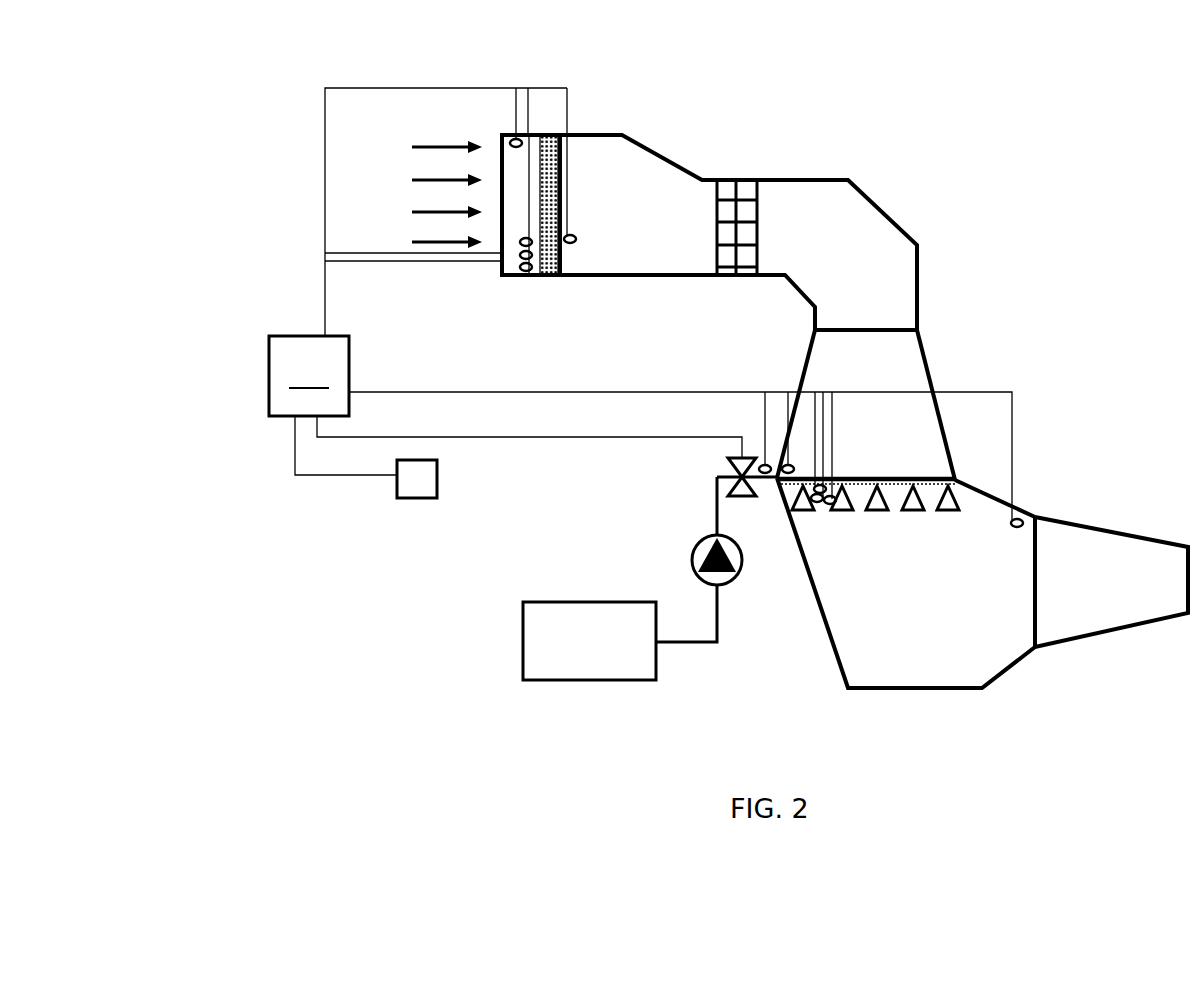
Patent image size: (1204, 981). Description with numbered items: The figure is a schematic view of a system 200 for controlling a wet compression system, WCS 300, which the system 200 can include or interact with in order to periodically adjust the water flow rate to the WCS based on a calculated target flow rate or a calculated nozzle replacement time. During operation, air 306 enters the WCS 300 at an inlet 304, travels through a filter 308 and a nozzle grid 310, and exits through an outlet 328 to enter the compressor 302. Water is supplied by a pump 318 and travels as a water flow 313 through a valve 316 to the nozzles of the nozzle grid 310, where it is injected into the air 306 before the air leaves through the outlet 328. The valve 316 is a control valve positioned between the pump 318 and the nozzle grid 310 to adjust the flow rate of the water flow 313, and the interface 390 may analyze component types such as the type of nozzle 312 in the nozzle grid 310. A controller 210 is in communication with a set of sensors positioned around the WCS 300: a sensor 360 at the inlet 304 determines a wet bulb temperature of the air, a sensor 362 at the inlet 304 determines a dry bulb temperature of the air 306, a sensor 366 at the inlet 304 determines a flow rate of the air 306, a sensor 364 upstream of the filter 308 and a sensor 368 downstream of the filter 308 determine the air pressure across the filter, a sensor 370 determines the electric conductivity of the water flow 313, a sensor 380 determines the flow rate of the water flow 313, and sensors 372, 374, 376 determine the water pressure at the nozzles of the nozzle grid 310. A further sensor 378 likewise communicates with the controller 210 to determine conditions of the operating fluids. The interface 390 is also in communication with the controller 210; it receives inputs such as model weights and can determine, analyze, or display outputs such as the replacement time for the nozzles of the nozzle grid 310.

The system 200 is at (275, 242).
The controller 210 is at (640, 304).
The WCS 300 is at (960, 294).
The compressor 302 is at (1125, 565).
The inlet 304 is at (502, 150).
The air 306 is at (421, 194).
The filter 308 is at (560, 152).
The nozzle grid 310 is at (930, 454).
The nozzle 312 is at (806, 508).
The water flow 313 is at (723, 573).
The valve 316 is at (735, 463).
The pump 318 is at (542, 640).
The outlet 328 is at (1035, 560).
The sensor 360 is at (530, 278).
The sensor 362 is at (524, 270).
The sensor 364 is at (521, 245).
The sensor 366 is at (519, 139).
The sensor 368 is at (574, 243).
The sensor 370 is at (760, 465).
The sensor 372 is at (824, 497).
The sensor 374 is at (817, 498).
The sensor 376 is at (830, 500).
The sensor 378 is at (1025, 508).
The sensor 380 is at (785, 466).
The interface 390 is at (410, 483).